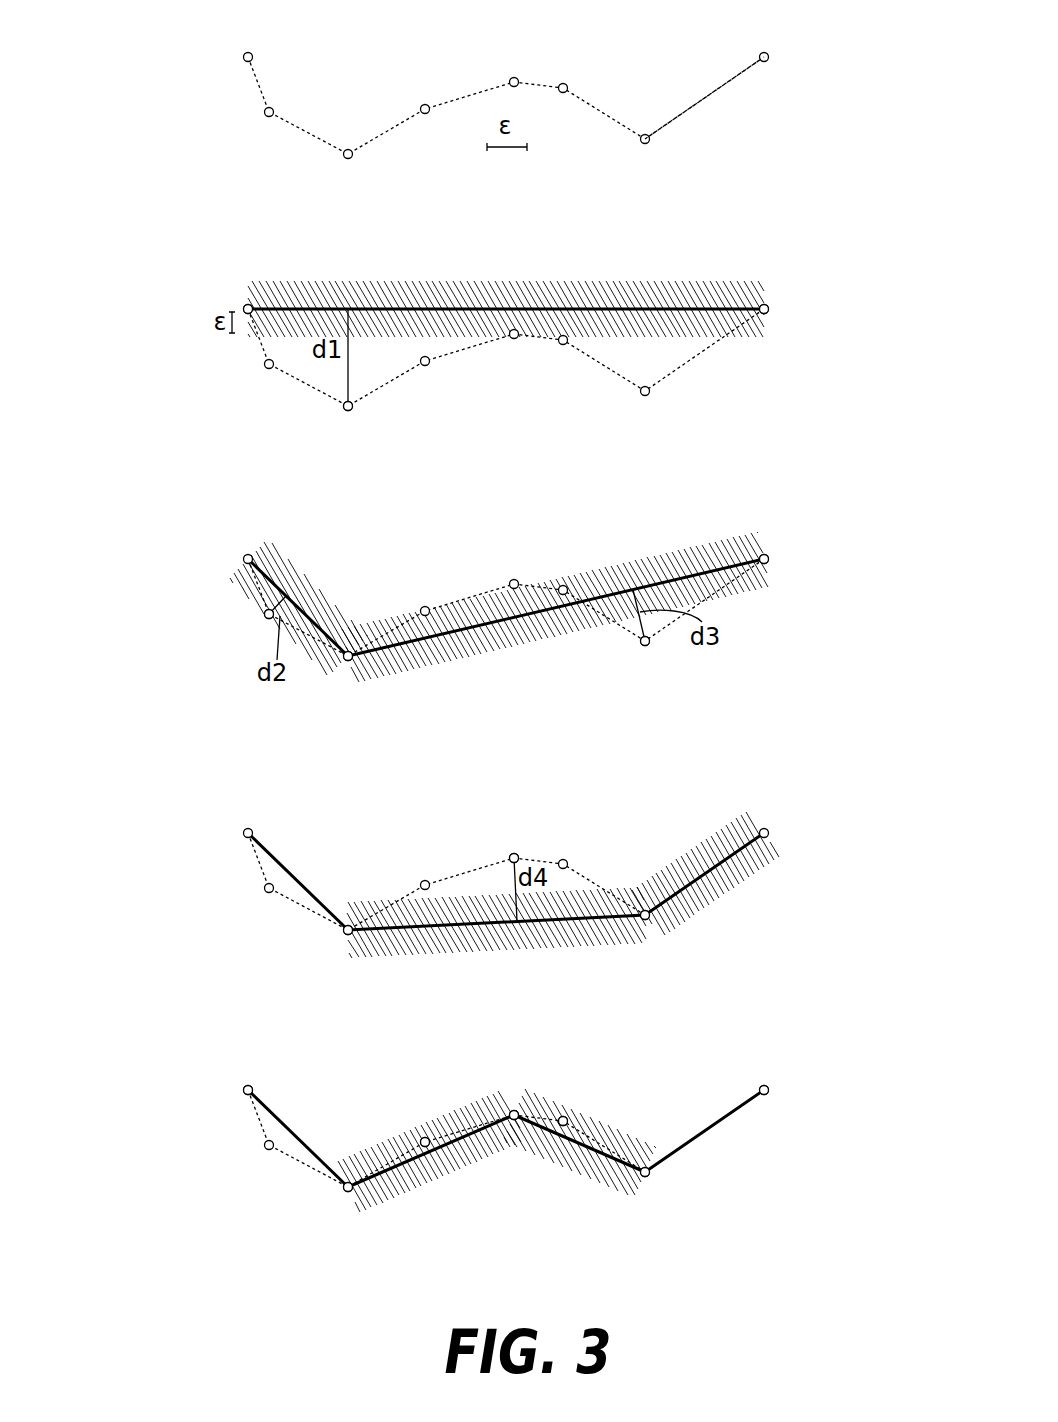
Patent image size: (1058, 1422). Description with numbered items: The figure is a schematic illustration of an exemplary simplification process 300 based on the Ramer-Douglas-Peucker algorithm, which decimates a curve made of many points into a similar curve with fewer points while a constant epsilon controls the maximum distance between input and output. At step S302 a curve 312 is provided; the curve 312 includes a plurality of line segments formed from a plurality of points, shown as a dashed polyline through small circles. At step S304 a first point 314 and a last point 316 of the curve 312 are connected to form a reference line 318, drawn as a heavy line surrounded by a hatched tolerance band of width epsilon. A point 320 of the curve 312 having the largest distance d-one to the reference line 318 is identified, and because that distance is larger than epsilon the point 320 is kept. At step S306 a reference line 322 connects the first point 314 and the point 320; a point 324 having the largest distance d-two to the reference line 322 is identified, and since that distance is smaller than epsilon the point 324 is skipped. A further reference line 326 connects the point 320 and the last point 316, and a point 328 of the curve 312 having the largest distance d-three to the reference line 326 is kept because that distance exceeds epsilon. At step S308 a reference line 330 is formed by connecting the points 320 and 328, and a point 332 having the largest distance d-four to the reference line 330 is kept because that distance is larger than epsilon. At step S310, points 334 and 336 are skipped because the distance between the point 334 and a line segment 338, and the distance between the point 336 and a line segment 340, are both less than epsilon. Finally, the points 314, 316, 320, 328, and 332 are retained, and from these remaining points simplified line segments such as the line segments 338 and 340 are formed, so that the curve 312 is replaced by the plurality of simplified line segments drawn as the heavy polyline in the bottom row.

The simplification process 300 is at (826, 79).
The curve 312 is at (700, 112).
The first point 314 is at (246, 306).
The last point 316 is at (767, 308).
The reference line 318 is at (682, 307).
The point 320 is at (349, 411).
The reference line 322 is at (302, 600).
The point 324 is at (264, 616).
The reference line 326 is at (507, 627).
The point 328 is at (648, 646).
The reference line 330 is at (550, 922).
The point 332 is at (513, 852).
The point 334 is at (423, 1138).
The point 336 is at (563, 1117).
The line segment 338 is at (427, 1162).
The line segment 340 is at (583, 1153).
The step S302 is at (172, 79).
The step S304 is at (172, 314).
The step S306 is at (172, 620).
The step S308 is at (172, 912).
The step S310 is at (172, 1180).